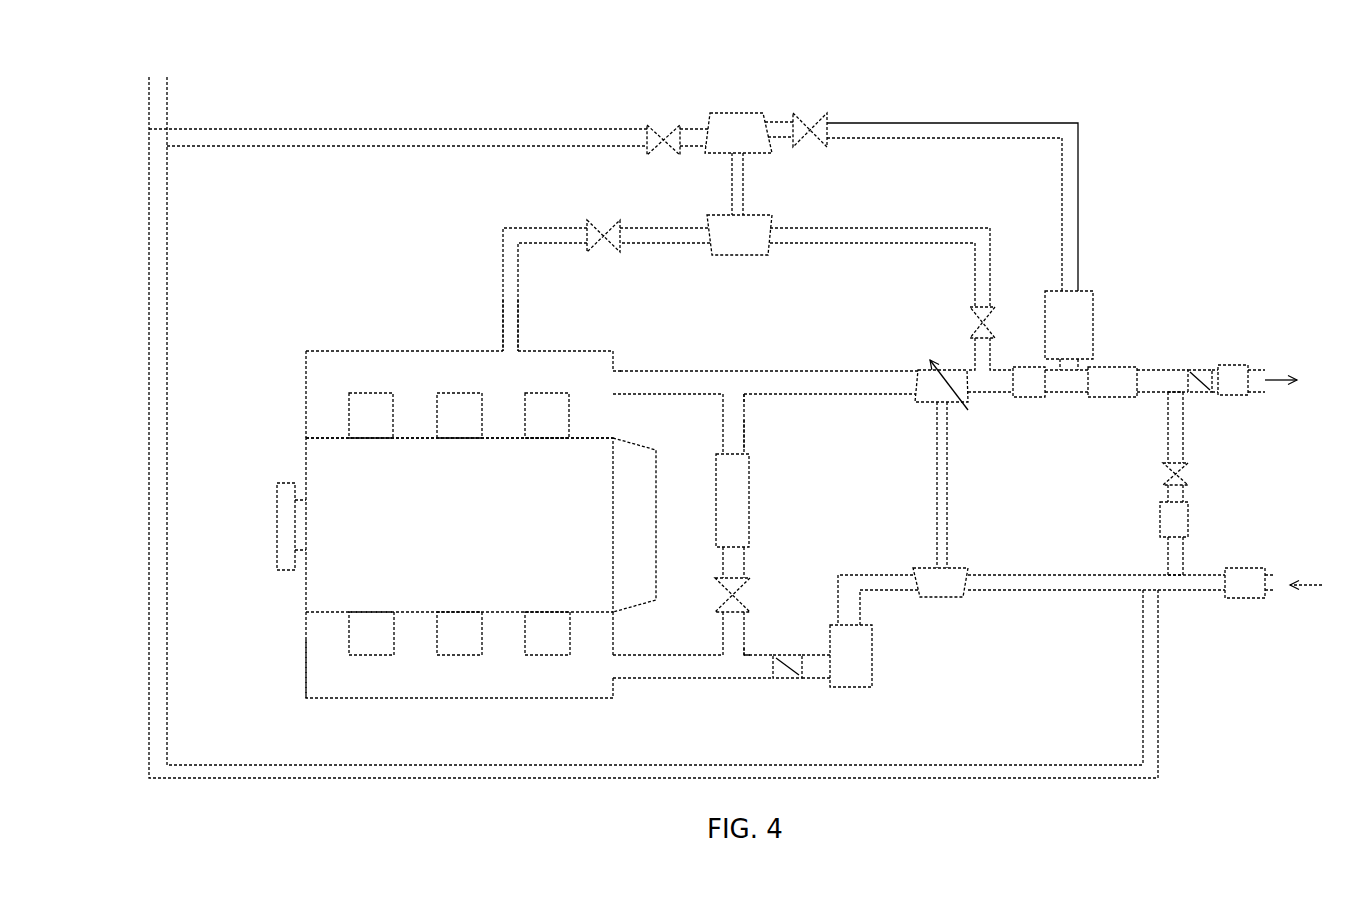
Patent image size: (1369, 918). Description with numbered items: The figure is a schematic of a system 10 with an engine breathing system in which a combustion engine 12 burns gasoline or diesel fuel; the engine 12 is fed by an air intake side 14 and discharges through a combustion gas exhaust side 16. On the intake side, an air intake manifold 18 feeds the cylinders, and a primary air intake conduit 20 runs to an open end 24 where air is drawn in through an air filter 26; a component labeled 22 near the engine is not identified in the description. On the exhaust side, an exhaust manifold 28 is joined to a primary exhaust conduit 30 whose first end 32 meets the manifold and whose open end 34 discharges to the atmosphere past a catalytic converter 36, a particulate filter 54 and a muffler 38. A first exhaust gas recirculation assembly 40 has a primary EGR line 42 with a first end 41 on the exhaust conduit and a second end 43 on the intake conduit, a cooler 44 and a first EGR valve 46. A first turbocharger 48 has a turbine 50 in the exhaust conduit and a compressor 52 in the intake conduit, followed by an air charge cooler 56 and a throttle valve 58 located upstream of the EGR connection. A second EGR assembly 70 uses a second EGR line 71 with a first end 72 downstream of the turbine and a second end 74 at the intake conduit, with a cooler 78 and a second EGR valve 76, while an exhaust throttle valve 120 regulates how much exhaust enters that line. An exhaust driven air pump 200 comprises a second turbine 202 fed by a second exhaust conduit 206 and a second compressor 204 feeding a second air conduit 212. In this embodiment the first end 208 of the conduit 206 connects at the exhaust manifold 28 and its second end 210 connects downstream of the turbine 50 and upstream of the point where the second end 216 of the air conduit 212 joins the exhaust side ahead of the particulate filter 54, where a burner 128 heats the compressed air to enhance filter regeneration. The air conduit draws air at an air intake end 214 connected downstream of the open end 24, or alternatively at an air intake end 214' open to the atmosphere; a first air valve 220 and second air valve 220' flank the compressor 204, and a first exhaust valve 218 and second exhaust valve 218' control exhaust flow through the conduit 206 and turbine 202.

The system 10 is at (265, 508).
The combustion engine 12 is at (355, 562).
The air intake side 14 is at (262, 660).
The combustion gas exhaust side 16 is at (283, 365).
The air intake manifold 18 is at (405, 672).
The primary air intake conduit 20 is at (700, 680).
The exhaust passage 22 is at (617, 648).
The open end 24 is at (1272, 582).
The air filter 26 is at (1245, 600).
The exhaust manifold 28 is at (437, 368).
The primary exhaust conduit 30 is at (730, 368).
The first end 32 is at (620, 367).
The open end 34 is at (1272, 378).
The catalytic converter 36 is at (1030, 367).
The muffler 38 is at (1228, 365).
The first exhaust gas recirculation assembly 40 is at (758, 438).
The first end 41 is at (746, 397).
The primary EGR line 42 is at (722, 437).
The second end 43 is at (748, 652).
The cooler 44 is at (755, 518).
The first EGR valve 46 is at (720, 592).
The first turbocharger 48 is at (933, 462).
The turbine 50 is at (918, 369).
The compressor 52 is at (925, 572).
The particulate filter 54 is at (1110, 375).
The air charge cooler 56 is at (872, 650).
The throttle valve 58 is at (790, 680).
The second exhaust gas recirculation assembly 70 is at (1165, 445).
The second EGR line 71 is at (1185, 425).
The first end 72 is at (1184, 396).
The second end 74 is at (1184, 574).
The second EGR valve 76 is at (1185, 475).
The cooler 78 is at (1190, 520).
The exhaust throttle valve 120 is at (1195, 367).
The burner 128 is at (1088, 297).
The exhaust driven air pump 200 is at (728, 180).
The second turbine 202 is at (757, 236).
The second compressor 204 is at (750, 128).
The second exhaust conduit 206 is at (502, 267).
The first end 208 is at (500, 348).
The second end 210 is at (973, 367).
The second air conduit 212 is at (1013, 122).
The air intake end 214 is at (1031, 611).
The air intake end 214' is at (653, 407).
The second end 216 is at (1080, 367).
The first exhaust valve 218 is at (585, 253).
The second exhaust valve 218' is at (1010, 304).
The first air valve 220 is at (650, 110).
The second air valve 220' is at (824, 109).